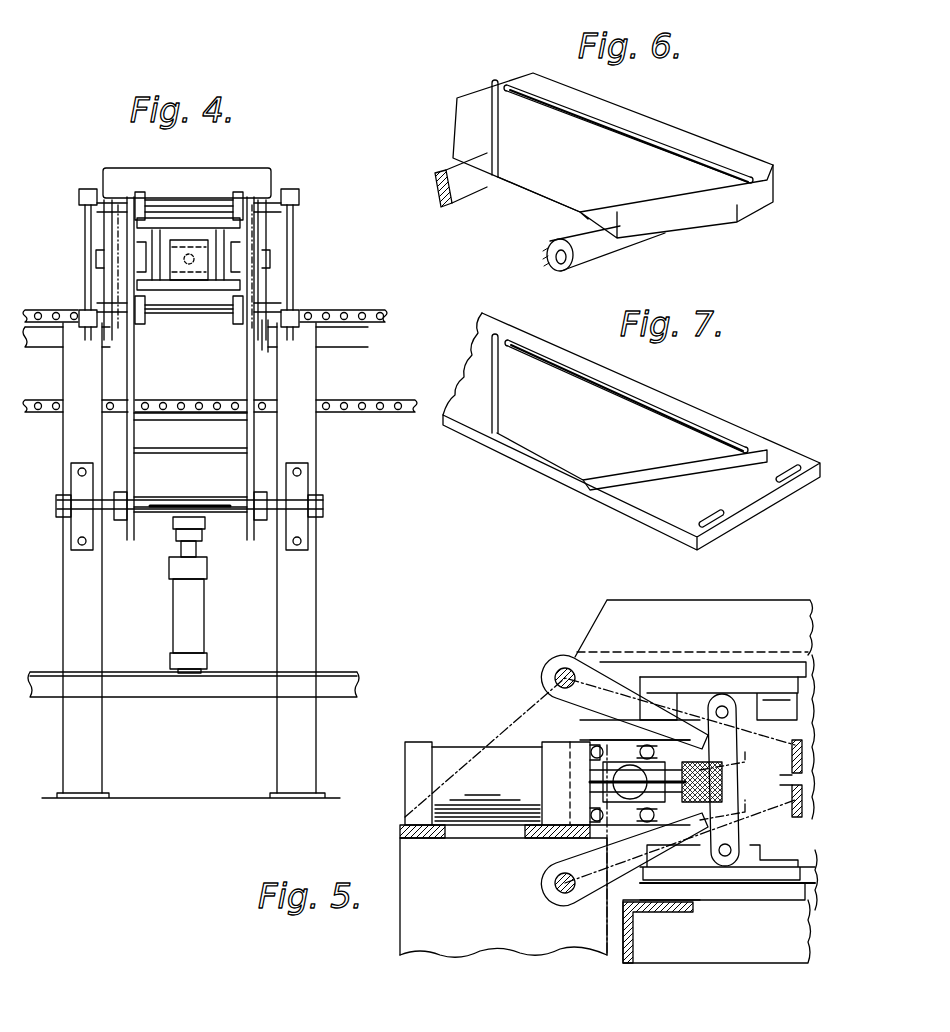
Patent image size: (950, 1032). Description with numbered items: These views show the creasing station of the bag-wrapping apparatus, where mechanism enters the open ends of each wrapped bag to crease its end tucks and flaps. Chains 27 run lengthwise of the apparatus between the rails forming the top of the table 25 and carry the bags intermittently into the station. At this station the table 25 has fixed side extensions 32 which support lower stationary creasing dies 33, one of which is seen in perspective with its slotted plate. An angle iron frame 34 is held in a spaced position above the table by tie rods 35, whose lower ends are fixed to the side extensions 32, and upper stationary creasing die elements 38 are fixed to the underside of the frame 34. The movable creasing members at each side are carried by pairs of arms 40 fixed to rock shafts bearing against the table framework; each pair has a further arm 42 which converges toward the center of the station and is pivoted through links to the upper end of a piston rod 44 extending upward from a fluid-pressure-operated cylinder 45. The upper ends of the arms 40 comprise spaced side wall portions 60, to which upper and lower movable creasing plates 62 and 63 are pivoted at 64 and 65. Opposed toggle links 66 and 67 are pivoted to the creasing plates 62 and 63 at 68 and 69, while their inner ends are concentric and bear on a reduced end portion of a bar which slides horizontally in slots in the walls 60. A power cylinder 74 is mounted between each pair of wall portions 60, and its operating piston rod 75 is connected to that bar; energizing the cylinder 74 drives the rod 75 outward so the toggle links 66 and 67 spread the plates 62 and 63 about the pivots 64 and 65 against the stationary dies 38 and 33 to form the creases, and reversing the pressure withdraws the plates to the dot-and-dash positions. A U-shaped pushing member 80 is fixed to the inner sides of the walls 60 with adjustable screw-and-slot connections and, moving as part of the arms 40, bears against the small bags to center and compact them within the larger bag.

In FIG. 4, the table 25 is at (335, 381).
In FIG. 4, the chains 27 is at (338, 295).
In FIG. 5, the side extensions 32 is at (662, 955).
In FIG. 4, the lower stationary creasing die 33 is at (266, 322).
In FIG. 7, the lower stationary creasing die 33 is at (718, 425).
In FIG. 5, the lower stationary creasing die 33 is at (767, 898).
In FIG. 4, the angle iron frame 34 is at (273, 172).
In FIG. 5, the angle iron frame 34 is at (780, 604).
In FIG. 4, the tie rods 35 is at (291, 258).
In FIG. 4, the upper stationary creasing die element 38 is at (115, 203).
In FIG. 5, the upper stationary creasing die element 38 is at (693, 668).
In FIG. 4, the arms 40 is at (250, 464).
In FIG. 5, the arms 40 is at (415, 958).
In FIG. 4, the further arm 42 is at (178, 530).
In FIG. 4, the piston rod 44 is at (185, 548).
In FIG. 4, the fluid-pressure-operated cylinder 45 is at (200, 608).
In FIG. 4, the side wall portions 60 is at (128, 238).
In FIG. 5, the side wall portions 60 is at (622, 722).
In FIG. 4, the upper movable creasing plate 62 is at (105, 214).
In FIG. 6, the upper movable creasing plate 62 is at (705, 143).
In FIG. 5, the upper movable creasing plate 62 is at (773, 682).
In FIG. 4, the lower movable creasing plate 63 is at (140, 205).
In FIG. 5, the lower movable creasing plate 63 is at (706, 878).
In FIG. 6, the pivot of upper movable creasing plate 64 is at (563, 263).
In FIG. 5, the pivot of upper movable creasing plate 64 is at (560, 660).
In FIG. 5, the pivot of lower movable creasing plate 65 is at (545, 883).
In FIG. 5, the toggle link 66 is at (728, 752).
In FIG. 5, the toggle link 67 is at (733, 802).
In FIG. 5, the pivot of toggle link to upper creasing plate 68 is at (725, 700).
In FIG. 5, the pivot of toggle link to lower creasing plate 69 is at (725, 858).
In FIG. 4, the power cylinder 74 is at (192, 246).
In FIG. 5, the power cylinder 74 is at (442, 742).
In FIG. 5, the operating piston rod 75 is at (597, 790).
In FIG. 4, the pushing member 80 is at (170, 240).
In FIG. 5, the pushing member 80 is at (800, 738).